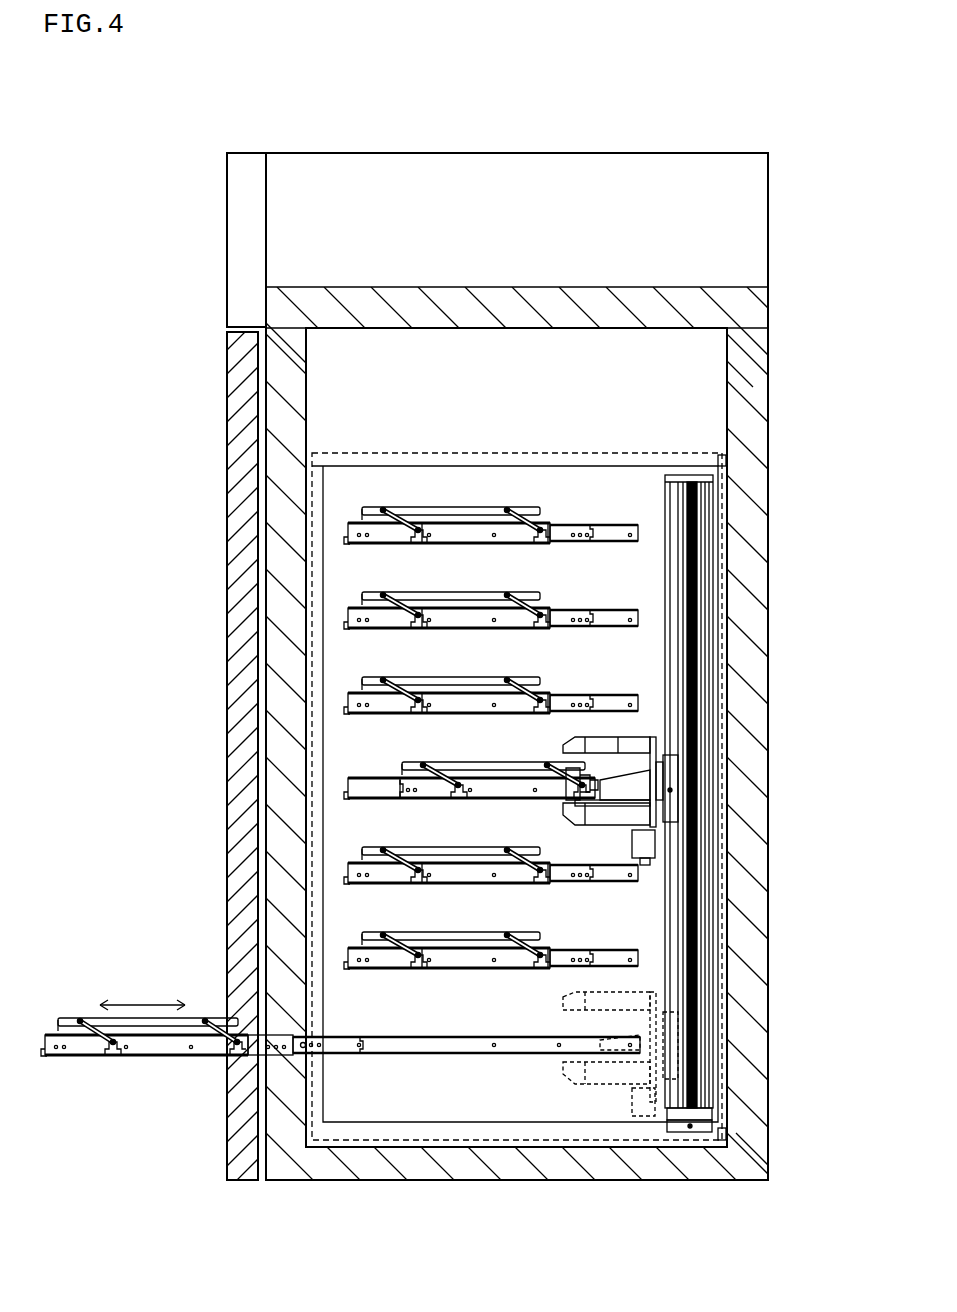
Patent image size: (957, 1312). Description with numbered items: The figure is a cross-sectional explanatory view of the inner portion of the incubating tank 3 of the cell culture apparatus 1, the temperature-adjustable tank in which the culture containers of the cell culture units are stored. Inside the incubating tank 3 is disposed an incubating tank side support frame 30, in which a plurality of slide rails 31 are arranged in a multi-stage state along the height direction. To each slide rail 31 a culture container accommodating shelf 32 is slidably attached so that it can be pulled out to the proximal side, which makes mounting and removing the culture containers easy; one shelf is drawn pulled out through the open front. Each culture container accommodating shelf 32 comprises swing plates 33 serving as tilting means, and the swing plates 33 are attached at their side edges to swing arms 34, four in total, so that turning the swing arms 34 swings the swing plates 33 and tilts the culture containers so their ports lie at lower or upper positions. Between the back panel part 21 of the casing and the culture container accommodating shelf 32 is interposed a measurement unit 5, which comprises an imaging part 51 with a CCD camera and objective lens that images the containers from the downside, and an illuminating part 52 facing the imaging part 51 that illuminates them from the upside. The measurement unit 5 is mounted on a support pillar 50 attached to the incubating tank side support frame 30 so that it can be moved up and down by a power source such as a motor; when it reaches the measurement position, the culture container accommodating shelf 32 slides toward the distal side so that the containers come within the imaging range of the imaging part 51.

The cell culture apparatus 1 is at (722, 130).
The incubating tank 3 is at (466, 1098).
The measurement unit 5 is at (715, 917).
The back panel part 21 is at (747, 513).
The incubating tank side support frame 30 is at (318, 1092).
The slide rail 31 is at (618, 622).
The culture container accommodating shelf 32 is at (340, 929).
The swing plate 33 is at (415, 762).
The swing arm 34 is at (425, 790).
The support pillar 50 is at (713, 1012).
The imaging part 51 is at (577, 790).
The illuminating part 52 is at (575, 748).